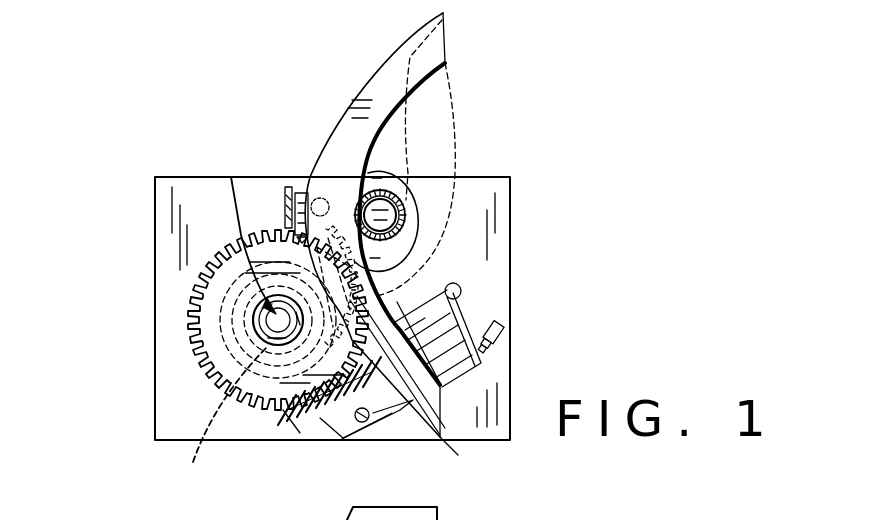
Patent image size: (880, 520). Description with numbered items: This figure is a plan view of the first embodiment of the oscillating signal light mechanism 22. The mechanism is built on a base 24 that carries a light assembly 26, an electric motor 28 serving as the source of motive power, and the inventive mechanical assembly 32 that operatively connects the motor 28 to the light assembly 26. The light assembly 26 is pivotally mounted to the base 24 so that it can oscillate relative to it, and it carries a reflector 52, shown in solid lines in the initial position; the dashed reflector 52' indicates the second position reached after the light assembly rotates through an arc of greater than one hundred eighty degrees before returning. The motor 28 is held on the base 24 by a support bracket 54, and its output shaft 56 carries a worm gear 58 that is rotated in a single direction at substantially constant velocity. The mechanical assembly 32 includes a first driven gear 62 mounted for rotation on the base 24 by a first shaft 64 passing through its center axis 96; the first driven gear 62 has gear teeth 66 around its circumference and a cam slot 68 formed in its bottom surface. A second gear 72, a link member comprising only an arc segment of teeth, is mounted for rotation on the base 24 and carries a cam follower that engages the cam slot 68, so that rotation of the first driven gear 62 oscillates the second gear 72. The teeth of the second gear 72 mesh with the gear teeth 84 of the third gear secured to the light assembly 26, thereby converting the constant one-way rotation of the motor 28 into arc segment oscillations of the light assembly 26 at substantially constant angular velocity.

The oscillating signal light mechanism 22 is at (241, 91).
The base 24 is at (493, 288).
The light assembly 26 is at (420, 190).
The electric motor 28 is at (465, 350).
The mechanical assembly 32 is at (215, 354).
The reflector 52 is at (374, 225).
The reflector (second position) 52' is at (456, 157).
The support bracket 54 is at (401, 420).
The output shaft 56 is at (442, 442).
The worm gear 58 is at (325, 428).
The first driven gear 62 is at (270, 392).
The first shaft 64 is at (265, 325).
The gear teeth 66 is at (186, 315).
The cam slot 68 is at (220, 418).
The second gear 72 is at (302, 185).
The gear teeth 84 is at (406, 224).
The center axis 96 is at (231, 177).